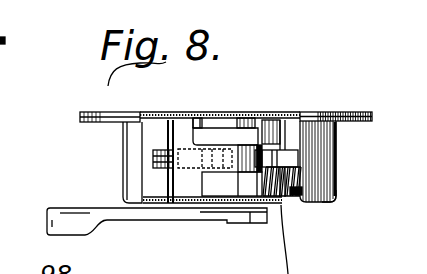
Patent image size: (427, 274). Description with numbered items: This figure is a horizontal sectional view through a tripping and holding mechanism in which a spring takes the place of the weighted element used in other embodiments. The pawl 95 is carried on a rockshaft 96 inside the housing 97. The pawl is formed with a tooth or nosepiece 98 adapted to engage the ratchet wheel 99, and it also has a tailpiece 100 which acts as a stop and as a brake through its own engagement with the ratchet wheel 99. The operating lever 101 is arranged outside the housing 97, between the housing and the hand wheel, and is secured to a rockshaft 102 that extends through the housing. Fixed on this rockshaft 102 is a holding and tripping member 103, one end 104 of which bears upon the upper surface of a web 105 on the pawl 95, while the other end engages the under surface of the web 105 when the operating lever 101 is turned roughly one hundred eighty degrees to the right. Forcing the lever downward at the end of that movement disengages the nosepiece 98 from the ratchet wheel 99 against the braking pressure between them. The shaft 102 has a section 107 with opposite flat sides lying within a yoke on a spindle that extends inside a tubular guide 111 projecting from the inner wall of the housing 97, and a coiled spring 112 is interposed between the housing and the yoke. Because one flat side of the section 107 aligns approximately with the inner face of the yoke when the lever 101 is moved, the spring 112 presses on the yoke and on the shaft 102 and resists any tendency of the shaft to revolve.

The pawl 95 is at (178, 162).
The rockshaft 96 is at (175, 114).
The housing 97 is at (327, 201).
The tooth or nosepiece 98 is at (227, 142).
The ratchet wheel 99 is at (240, 166).
The tailpiece 100 is at (153, 166).
The operating lever 101 is at (82, 196).
The rockshaft 102 is at (253, 146).
The holding and tripping member 103 is at (256, 142).
The end of holding and tripping member 104 is at (200, 134).
The web 105 is at (197, 114).
The section of shaft with flat sides 107 is at (355, 113).
The tubular guide 111 is at (300, 206).
The coiled spring 112 is at (298, 183).